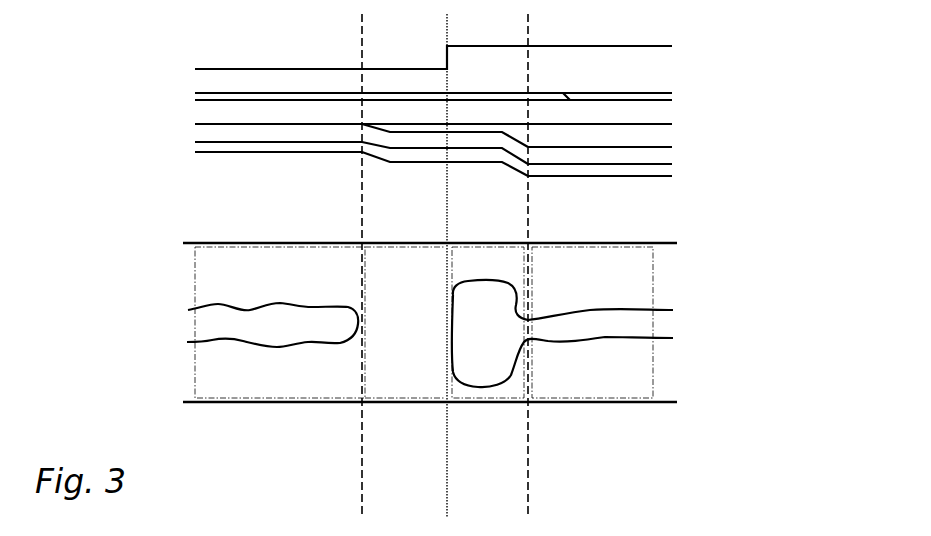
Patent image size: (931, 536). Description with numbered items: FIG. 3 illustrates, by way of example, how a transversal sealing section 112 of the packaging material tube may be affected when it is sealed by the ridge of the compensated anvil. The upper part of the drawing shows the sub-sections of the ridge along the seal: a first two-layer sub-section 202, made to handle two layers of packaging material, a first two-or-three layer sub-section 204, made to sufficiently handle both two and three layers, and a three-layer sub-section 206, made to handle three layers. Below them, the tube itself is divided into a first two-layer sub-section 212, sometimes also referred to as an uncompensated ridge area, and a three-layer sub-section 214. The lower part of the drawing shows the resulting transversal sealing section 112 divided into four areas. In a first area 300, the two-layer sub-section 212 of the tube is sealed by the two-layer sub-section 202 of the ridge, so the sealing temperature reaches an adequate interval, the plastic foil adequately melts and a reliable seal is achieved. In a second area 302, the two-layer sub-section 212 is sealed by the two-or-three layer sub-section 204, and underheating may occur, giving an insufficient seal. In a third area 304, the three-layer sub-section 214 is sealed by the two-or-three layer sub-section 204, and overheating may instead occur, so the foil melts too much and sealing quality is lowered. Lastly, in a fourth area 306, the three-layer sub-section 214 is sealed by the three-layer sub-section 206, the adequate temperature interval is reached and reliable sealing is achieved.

The transversal sealing section 112 is at (704, 294).
The first two-layer sub-section 202 is at (195, 31).
The first two-or-three layer sub-section 204 is at (362, 31).
The three-layer sub-section 206 is at (528, 31).
The first two-layer sub-section 212 is at (447, 191).
The three-layer sub-section 214 is at (672, 191).
The first area 300 is at (299, 400).
The second area 302 is at (408, 400).
The third area 304 is at (519, 400).
The fourth area 306 is at (610, 400).